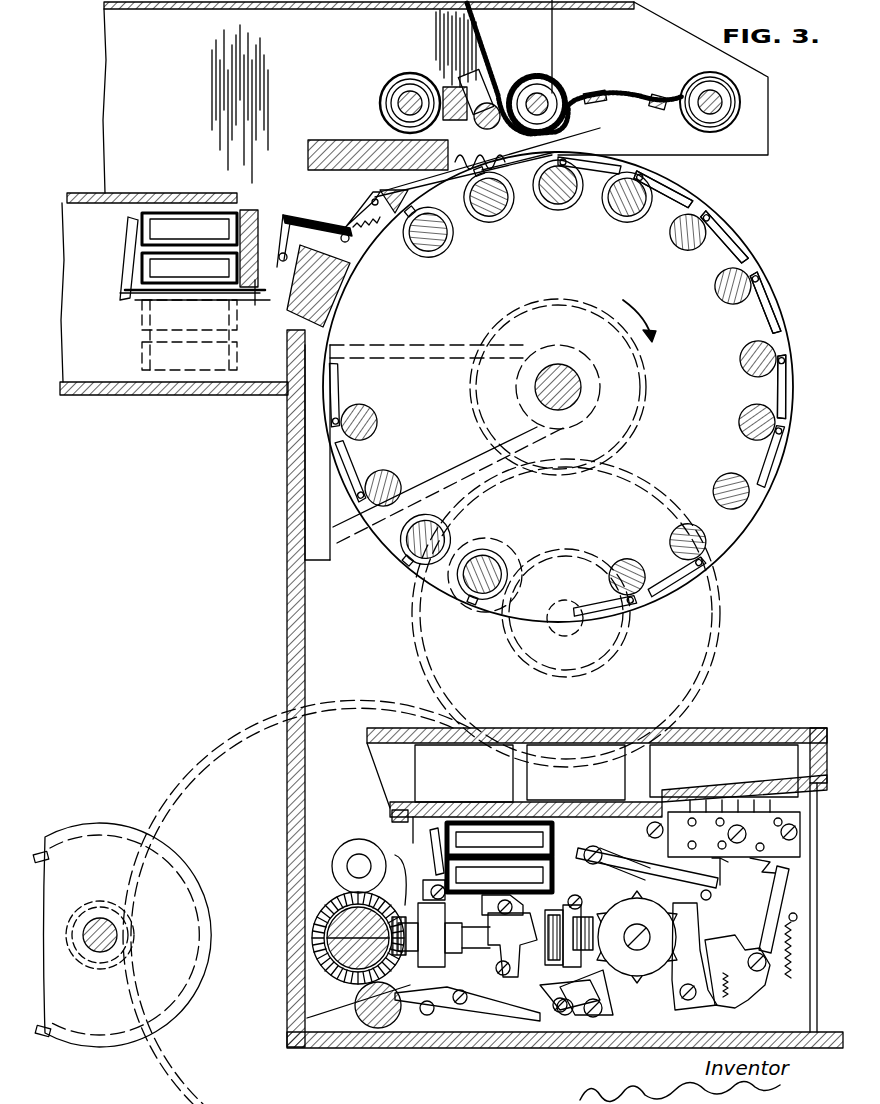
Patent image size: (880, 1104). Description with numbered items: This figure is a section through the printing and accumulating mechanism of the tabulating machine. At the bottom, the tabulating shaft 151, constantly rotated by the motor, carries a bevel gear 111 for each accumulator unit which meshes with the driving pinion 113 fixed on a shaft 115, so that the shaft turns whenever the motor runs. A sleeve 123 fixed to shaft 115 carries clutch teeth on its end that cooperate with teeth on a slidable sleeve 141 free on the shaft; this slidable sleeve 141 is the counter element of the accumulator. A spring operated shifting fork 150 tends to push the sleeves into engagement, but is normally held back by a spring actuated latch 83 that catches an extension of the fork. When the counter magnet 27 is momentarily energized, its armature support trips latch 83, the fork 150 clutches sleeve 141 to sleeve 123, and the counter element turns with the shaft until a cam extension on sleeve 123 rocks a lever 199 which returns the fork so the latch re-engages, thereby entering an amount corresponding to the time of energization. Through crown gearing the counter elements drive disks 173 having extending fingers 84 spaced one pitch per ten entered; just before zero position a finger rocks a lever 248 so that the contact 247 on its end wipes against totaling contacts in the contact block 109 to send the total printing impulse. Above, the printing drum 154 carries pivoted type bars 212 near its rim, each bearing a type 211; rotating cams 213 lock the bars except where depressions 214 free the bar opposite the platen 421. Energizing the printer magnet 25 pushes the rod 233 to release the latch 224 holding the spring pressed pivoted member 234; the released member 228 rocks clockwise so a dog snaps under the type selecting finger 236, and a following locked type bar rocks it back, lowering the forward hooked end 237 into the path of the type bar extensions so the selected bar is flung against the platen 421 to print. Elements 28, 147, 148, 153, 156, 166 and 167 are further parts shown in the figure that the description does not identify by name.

The printer magnet 25 is at (175, 270).
The counter magnet 27 is at (513, 840).
The frame 28 is at (805, 950).
The spring actuated latch 83 is at (522, 908).
The extending fingers 84 is at (640, 905).
The contact block 109 is at (787, 815).
The bevel gears 111 is at (312, 898).
The driving pinion 113 is at (400, 870).
The shaft 115 is at (470, 965).
The sleeve 123 is at (545, 990).
The slidable sleeve 141 is at (582, 908).
The roller 147 is at (355, 1008).
The lever 148 is at (410, 992).
The shifting fork 150 is at (605, 1002).
The tabulating shaft 151 is at (312, 950).
The roller 153 is at (93, 857).
The drum 154 is at (677, 277).
The path of roller 156 is at (724, 620).
The latch 166 is at (758, 866).
The spring rod 167 is at (783, 888).
The disks 173 is at (663, 930).
The lever 199 is at (500, 985).
The type 211 is at (690, 195).
The type bars 212 is at (720, 240).
The rotating cams 213 is at (748, 363).
The depressions 214 is at (750, 405).
The latch 224 is at (248, 287).
The member 228 is at (308, 230).
The rod 233 is at (197, 297).
The spring pressed pivoted member 234 is at (370, 243).
The type selecting finger 236 is at (548, 90).
The forward hooked end 237 is at (509, 153).
The contact 247 is at (722, 875).
The lever 248 is at (686, 858).
The platen 421 is at (527, 80).